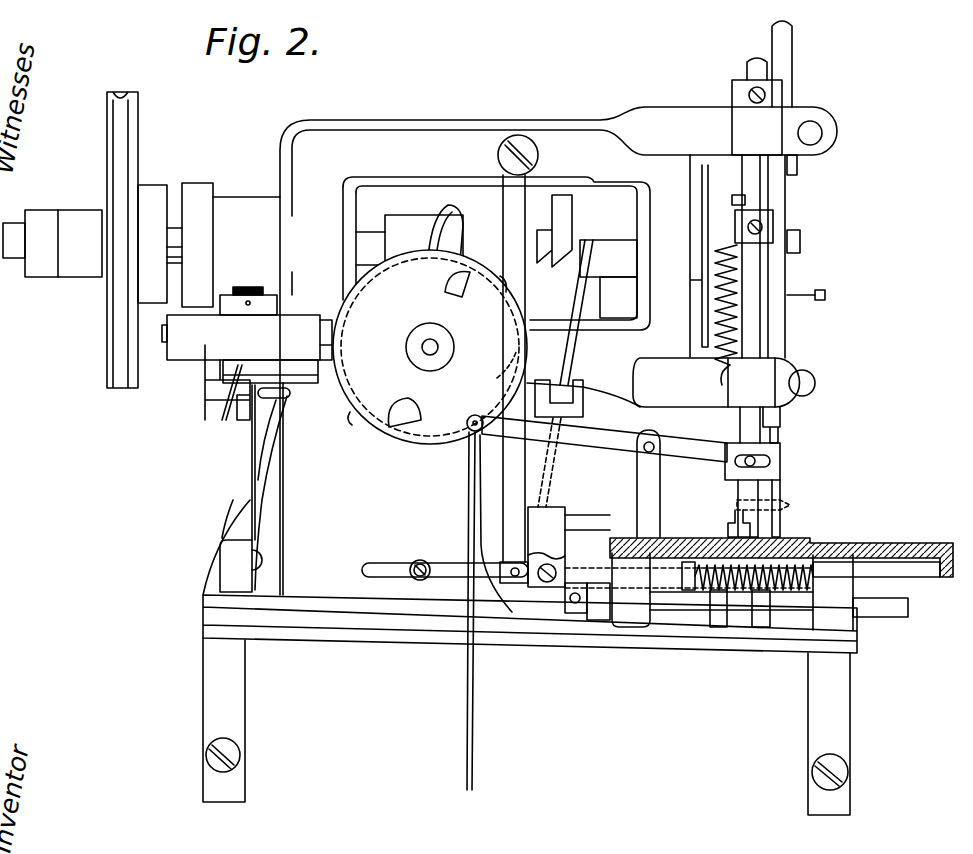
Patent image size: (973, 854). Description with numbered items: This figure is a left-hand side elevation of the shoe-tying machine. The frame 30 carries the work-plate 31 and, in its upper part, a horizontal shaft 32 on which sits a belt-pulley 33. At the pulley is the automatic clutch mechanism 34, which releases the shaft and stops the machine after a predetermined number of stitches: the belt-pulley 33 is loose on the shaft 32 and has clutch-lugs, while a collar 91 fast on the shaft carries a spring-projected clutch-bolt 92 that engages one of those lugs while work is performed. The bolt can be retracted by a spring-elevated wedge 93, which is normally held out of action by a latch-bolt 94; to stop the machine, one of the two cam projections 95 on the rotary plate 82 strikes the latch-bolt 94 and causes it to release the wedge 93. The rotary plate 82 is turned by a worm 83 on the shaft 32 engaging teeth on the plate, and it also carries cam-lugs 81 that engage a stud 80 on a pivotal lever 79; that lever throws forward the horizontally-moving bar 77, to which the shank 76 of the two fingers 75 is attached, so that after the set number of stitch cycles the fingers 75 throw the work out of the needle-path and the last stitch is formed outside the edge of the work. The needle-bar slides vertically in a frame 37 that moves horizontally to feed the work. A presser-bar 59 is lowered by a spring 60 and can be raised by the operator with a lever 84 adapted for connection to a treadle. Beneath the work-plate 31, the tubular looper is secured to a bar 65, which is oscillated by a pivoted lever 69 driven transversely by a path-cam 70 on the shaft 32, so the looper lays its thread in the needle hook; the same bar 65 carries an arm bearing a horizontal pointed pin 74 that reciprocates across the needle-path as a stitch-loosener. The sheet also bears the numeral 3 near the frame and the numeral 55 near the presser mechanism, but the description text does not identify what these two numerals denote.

The frame 3 is at (561, 292).
The overhanging arm of frame 30 is at (340, 138).
The work plate 31 is at (870, 543).
The bearing block 32 is at (617, 246).
The band wheel 33 is at (120, 147).
The clutch disk 34 is at (175, 232).
The presser bar 37 is at (777, 325).
The set screw 55 is at (826, 295).
The needle bar spring 59 is at (757, 280).
The collar 60 is at (740, 268).
The feed spring 65 is at (695, 607).
The connecting rod 69 is at (575, 316).
The pivot screw 70 is at (560, 222).
The needle clamp 74 is at (783, 503).
The presser foot 75 is at (735, 515).
The slide block 76 is at (600, 523).
The feed bar 77 is at (668, 580).
The needle bar 79 is at (505, 490).
The crank pin 80 is at (490, 571).
The pawl 81 is at (455, 285).
The ratchet wheel 82 is at (362, 368).
The stop finger 83 is at (433, 210).
The lever 84 is at (612, 445).
The shaft 91 is at (247, 200).
The clutch lug 92 is at (178, 303).
The clutch body 93 is at (218, 305).
The pin 94 is at (327, 390).
The stop notch 95 is at (505, 283).